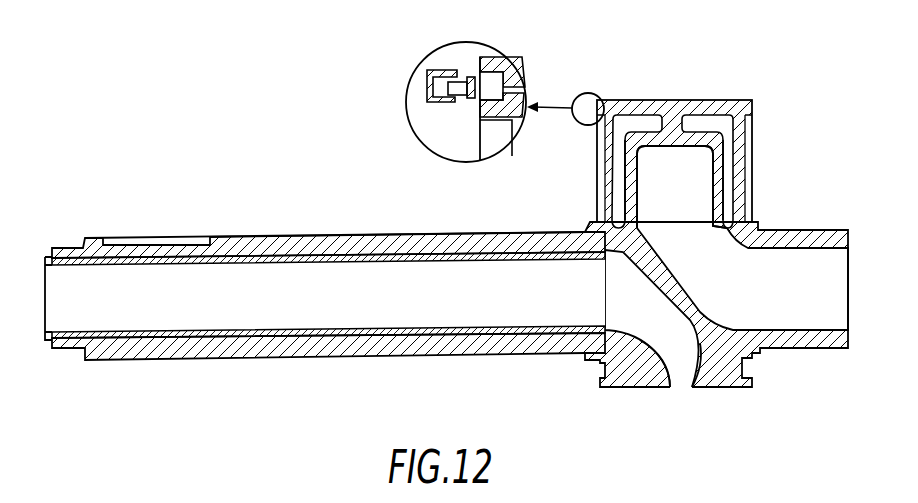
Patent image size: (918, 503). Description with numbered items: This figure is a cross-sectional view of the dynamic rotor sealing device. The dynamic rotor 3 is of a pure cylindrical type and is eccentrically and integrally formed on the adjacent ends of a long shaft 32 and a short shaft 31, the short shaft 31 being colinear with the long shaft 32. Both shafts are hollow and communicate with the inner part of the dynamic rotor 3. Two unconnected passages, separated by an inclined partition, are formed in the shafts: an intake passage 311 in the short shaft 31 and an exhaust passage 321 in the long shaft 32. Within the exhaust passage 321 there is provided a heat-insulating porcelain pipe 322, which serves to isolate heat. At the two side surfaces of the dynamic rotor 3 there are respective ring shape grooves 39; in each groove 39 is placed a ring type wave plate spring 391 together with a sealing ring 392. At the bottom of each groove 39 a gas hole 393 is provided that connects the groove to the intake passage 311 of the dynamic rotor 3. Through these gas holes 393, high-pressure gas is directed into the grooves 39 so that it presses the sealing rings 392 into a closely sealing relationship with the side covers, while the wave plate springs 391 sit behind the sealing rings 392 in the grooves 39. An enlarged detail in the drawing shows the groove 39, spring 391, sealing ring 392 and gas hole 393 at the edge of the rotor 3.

The dynamic rotor 3 is at (480, 55).
The short shaft 31 is at (797, 343).
The intake passage 311 is at (702, 178).
The long shaft 32 is at (262, 352).
The exhaust passage 321 is at (676, 384).
The heat-insulating porcelain pipe 322 is at (392, 330).
The ring shape groove 39 is at (497, 72).
The ring type wave plate spring 391 is at (472, 99).
The sealing ring 392 is at (433, 102).
The gas hole 393 is at (523, 84).